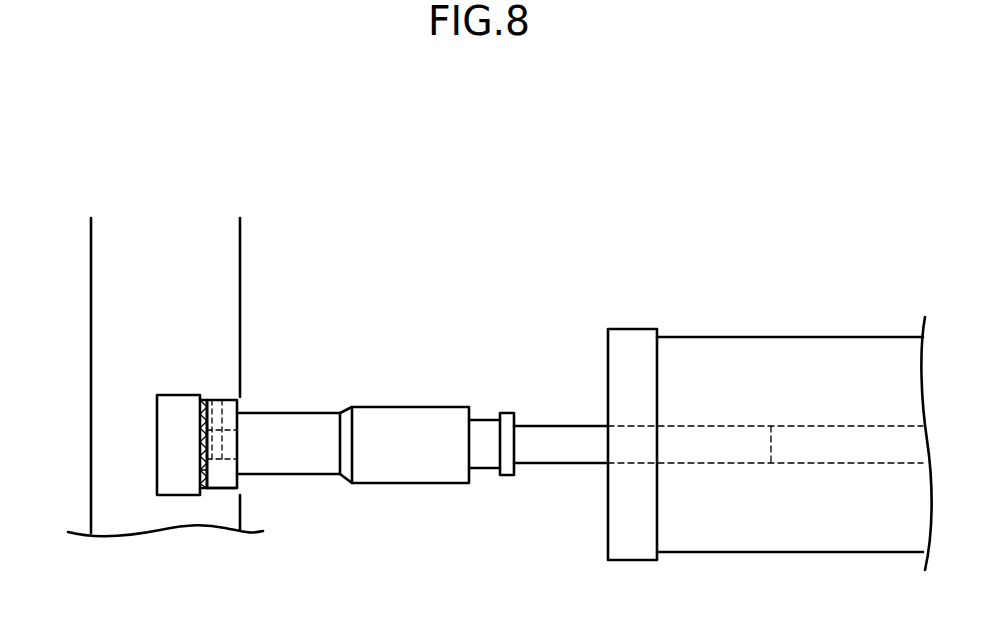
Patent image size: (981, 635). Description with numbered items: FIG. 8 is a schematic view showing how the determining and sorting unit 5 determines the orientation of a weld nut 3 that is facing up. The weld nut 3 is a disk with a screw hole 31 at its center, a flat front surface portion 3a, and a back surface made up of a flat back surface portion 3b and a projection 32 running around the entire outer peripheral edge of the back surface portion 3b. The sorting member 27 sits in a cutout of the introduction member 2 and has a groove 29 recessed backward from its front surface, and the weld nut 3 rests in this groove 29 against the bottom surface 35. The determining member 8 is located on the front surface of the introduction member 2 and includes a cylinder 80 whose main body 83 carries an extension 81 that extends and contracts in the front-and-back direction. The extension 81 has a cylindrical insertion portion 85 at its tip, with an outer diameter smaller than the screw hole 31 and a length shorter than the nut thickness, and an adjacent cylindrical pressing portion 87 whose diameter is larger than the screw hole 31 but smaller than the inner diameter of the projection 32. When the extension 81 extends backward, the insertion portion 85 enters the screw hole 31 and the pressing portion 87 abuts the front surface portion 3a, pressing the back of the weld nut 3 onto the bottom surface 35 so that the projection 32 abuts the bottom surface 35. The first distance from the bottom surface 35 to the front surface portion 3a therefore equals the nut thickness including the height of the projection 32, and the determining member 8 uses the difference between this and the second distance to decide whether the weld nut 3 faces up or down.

The introduction member 2 is at (118, 263).
The sorting member 27 is at (178, 400).
The bottom surface 35 is at (200, 412).
The back surface portion 3b is at (207, 430).
The screw hole 31 is at (205, 450).
The projection 32 is at (205, 472).
The insertion portion 85 is at (219, 399).
The weld nut 3 is at (243, 406).
The pressing portion 87 is at (310, 413).
The extension 81 is at (401, 405).
The front surface portion 3a is at (240, 486).
The groove 29 is at (241, 497).
The determining and sorting unit 5 is at (453, 270).
The determining member 8 is at (665, 267).
The cylinder 80 is at (745, 337).
The main body 83 is at (822, 337).